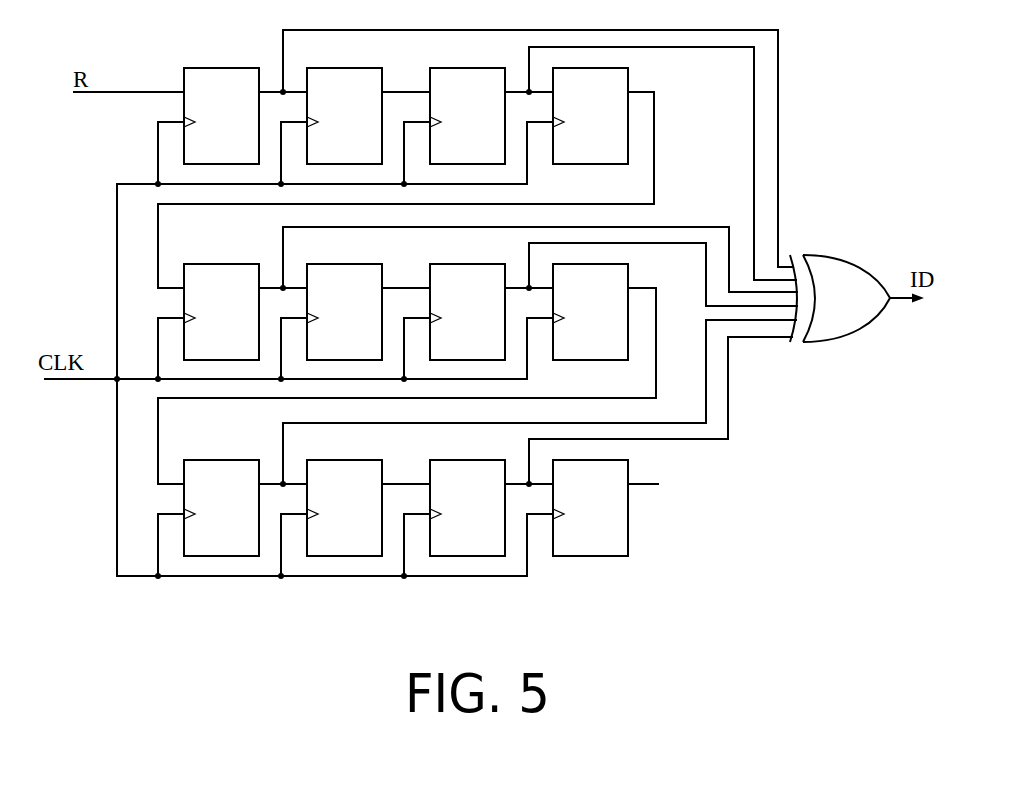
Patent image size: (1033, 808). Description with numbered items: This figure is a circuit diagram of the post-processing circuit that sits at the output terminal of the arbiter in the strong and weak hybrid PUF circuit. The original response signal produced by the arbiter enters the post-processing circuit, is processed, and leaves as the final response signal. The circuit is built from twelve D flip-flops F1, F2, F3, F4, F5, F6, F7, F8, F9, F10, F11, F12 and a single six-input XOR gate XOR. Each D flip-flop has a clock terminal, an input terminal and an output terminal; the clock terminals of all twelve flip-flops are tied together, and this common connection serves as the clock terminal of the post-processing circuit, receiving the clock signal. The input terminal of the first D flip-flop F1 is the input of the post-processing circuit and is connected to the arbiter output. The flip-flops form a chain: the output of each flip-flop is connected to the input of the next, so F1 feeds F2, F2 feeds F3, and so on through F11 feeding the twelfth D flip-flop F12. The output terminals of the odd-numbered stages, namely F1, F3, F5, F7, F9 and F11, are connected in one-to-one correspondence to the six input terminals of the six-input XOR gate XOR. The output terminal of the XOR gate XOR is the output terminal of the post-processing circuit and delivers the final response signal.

The first D flip-flop F1 is at (221, 104).
The second D flip-flop F2 is at (344, 104).
The third D flip-flop F3 is at (467, 104).
The fourth D flip-flop F4 is at (590, 104).
The fifth D flip-flop F5 is at (221, 300).
The sixth D flip-flop F6 is at (344, 300).
The seventh D flip-flop F7 is at (467, 300).
The eighth D flip-flop F8 is at (590, 300).
The ninth D flip-flop F9 is at (221, 496).
The tenth D flip-flop F10 is at (344, 496).
The eleventh D flip-flop F11 is at (467, 496).
The twelfth D flip-flop F12 is at (590, 496).
The six-input XOR gate XOR is at (857, 298).